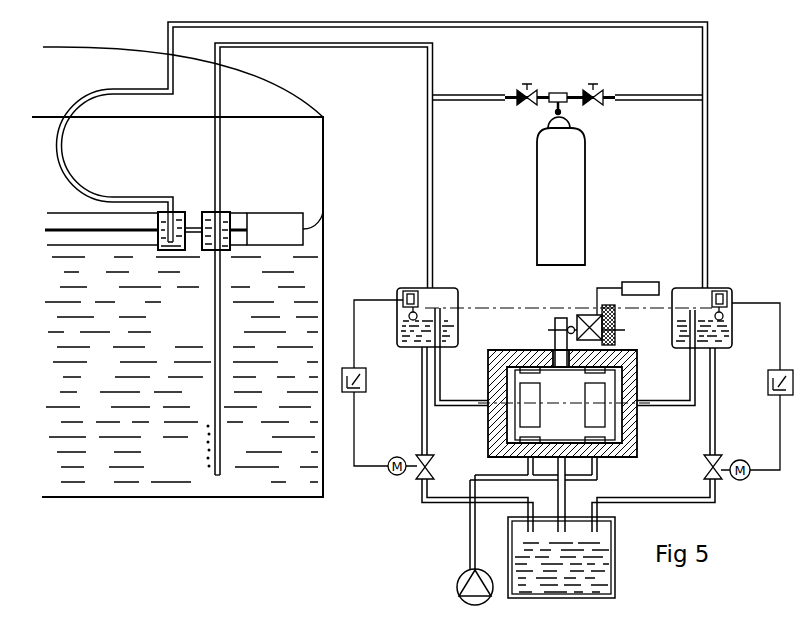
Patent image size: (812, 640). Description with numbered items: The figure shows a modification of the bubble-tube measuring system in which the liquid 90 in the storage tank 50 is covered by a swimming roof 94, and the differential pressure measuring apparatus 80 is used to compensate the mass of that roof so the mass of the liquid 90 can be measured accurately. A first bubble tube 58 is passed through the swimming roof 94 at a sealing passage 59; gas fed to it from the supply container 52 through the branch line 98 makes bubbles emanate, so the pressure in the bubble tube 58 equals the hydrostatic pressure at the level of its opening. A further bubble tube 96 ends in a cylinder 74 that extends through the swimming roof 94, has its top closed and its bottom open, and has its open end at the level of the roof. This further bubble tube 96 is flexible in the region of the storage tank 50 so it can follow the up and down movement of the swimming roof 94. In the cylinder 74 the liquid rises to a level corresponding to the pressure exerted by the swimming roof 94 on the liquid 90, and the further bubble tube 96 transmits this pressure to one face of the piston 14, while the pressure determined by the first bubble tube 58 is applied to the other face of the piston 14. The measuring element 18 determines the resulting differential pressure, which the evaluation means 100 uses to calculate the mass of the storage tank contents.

The piston 14 is at (547, 359).
The force measuring element 18 is at (591, 309).
The storage tank 50 is at (297, 498).
The supply container 52 is at (578, 207).
The bubble tube 58 is at (221, 140).
The sealing passage 59 is at (226, 210).
The cylinder 74 is at (178, 209).
The differential pressure measuring apparatus 80 is at (643, 462).
The liquid 90 is at (308, 302).
The swimming roof 94 is at (289, 217).
The further bubble tube 96 is at (650, 30).
The branch line with shut-off valves 98 is at (638, 102).
The evaluation means 100 is at (637, 287).